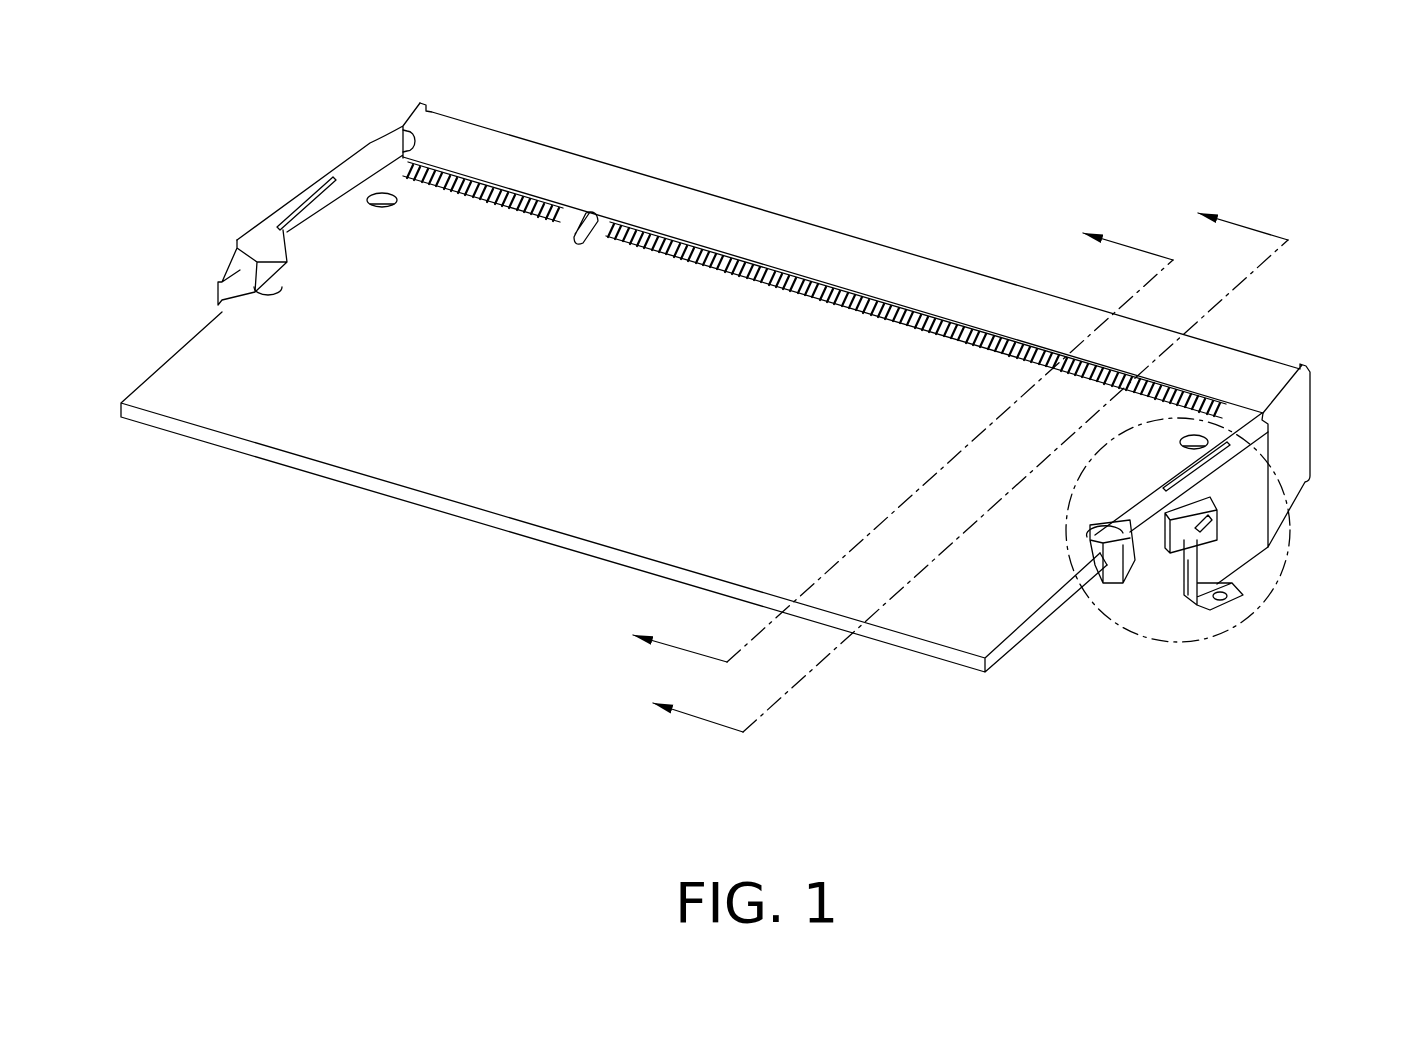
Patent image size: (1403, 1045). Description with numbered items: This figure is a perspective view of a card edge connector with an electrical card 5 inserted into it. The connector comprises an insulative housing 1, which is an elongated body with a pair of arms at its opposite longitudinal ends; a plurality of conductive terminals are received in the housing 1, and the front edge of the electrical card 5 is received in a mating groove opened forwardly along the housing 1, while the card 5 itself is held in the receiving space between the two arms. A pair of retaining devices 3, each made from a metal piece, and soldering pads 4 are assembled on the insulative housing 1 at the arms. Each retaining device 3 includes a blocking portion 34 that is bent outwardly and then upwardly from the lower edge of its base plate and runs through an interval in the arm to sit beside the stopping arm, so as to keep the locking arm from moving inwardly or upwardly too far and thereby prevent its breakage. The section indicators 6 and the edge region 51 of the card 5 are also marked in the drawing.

The insulative housing 1 is at (800, 405).
The retaining device 3 is at (1132, 553).
The soldering pad 4 is at (1205, 603).
The electrical card 5 is at (570, 470).
The edge of circuit board 51 is at (1100, 547).
The section line 6 is at (895, 437).
The blocking portion 34 is at (1213, 520).